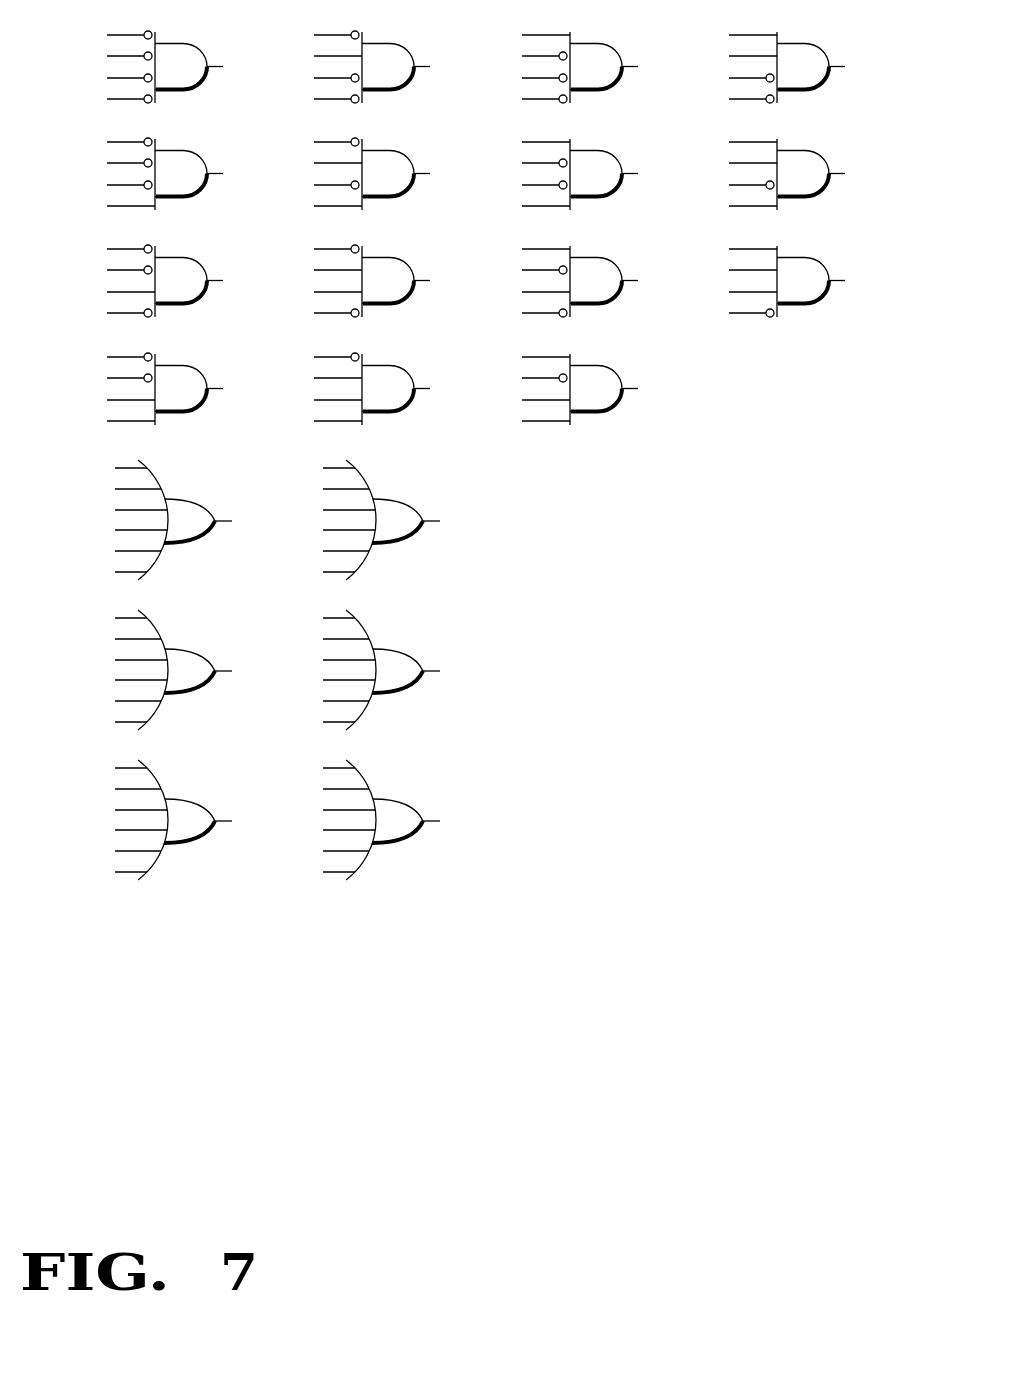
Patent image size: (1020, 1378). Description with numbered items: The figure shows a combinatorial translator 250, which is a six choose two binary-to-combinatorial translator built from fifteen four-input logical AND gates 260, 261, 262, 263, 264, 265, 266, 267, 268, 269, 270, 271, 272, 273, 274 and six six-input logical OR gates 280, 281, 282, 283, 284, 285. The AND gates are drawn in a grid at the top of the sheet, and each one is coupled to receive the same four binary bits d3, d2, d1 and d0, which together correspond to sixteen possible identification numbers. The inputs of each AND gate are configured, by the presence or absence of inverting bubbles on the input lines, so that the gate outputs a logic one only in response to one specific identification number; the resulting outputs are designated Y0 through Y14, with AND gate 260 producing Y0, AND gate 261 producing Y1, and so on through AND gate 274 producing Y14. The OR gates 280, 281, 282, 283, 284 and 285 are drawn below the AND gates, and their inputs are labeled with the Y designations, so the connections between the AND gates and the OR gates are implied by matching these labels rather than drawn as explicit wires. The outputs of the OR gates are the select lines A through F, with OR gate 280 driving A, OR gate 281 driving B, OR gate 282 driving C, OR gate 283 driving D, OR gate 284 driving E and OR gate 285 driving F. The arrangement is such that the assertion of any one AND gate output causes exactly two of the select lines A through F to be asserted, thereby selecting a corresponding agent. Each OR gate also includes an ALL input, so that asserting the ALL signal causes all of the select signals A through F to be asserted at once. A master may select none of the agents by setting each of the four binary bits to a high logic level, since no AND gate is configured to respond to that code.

The combinatorial translator 250 is at (480, 626).
The logical AND gate 260 is at (162, 75).
The logical AND gate 261 is at (162, 182).
The logical AND gate 262 is at (162, 289).
The logical AND gate 263 is at (162, 397).
The logical AND gate 264 is at (369, 75).
The logical AND gate 265 is at (369, 182).
The logical AND gate 266 is at (369, 289).
The logical AND gate 267 is at (369, 397).
The logical AND gate 268 is at (577, 75).
The logical AND gate 269 is at (577, 182).
The logical AND gate 270 is at (577, 289).
The logical AND gate 271 is at (577, 397).
The logical AND gate 272 is at (784, 75).
The logical AND gate 273 is at (784, 182).
The logical AND gate 274 is at (784, 289).
The logical OR gate 280 is at (174, 530).
The logical OR gate 281 is at (174, 680).
The logical OR gate 282 is at (174, 830).
The logical OR gate 283 is at (382, 530).
The logical OR gate 284 is at (382, 680).
The logical OR gate 285 is at (382, 830).